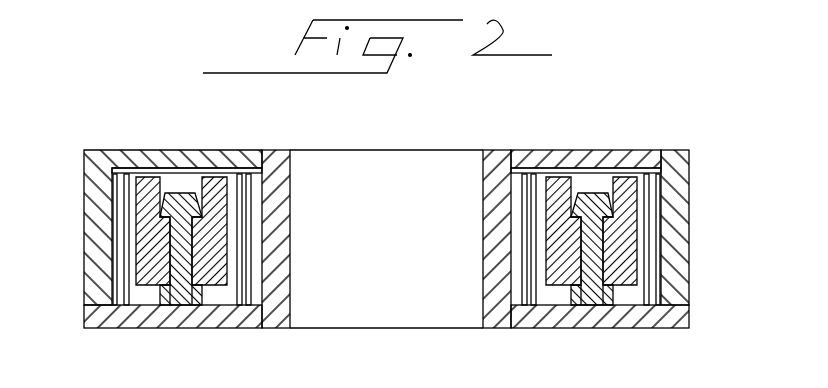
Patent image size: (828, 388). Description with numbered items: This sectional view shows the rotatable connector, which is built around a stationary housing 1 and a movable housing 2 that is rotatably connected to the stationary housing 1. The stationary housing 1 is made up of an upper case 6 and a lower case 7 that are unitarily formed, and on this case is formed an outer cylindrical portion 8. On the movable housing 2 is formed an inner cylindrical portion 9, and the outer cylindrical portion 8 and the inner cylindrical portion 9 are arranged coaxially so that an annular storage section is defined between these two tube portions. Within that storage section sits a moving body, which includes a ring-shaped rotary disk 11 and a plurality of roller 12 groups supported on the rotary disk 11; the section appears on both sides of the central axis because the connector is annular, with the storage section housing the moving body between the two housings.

The stationary housing 1 is at (650, 239).
The movable housing 2 is at (492, 157).
The upper case 6 is at (683, 267).
The lower case 7 is at (626, 311).
The outer cylindrical portion 8 is at (92, 243).
The inner cylindrical portion 9 is at (488, 285).
The rotary disk 11 is at (178, 303).
The roller 12 is at (215, 200).